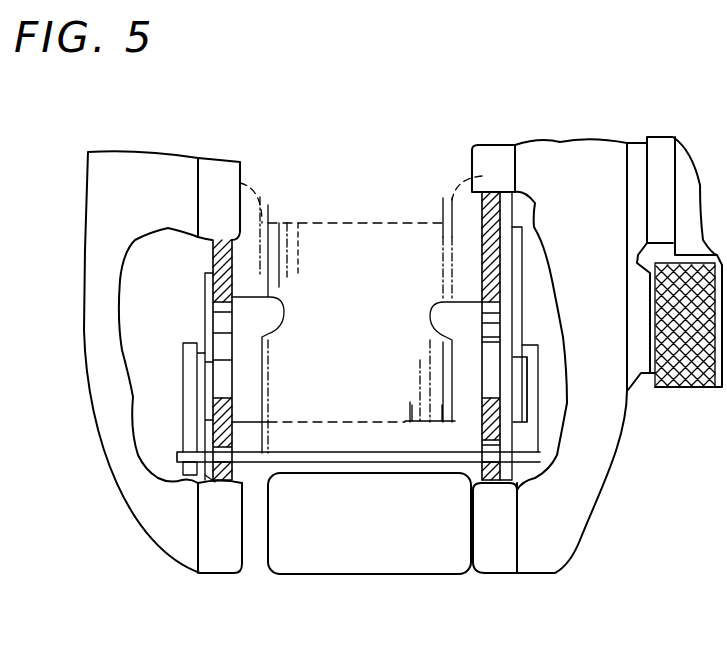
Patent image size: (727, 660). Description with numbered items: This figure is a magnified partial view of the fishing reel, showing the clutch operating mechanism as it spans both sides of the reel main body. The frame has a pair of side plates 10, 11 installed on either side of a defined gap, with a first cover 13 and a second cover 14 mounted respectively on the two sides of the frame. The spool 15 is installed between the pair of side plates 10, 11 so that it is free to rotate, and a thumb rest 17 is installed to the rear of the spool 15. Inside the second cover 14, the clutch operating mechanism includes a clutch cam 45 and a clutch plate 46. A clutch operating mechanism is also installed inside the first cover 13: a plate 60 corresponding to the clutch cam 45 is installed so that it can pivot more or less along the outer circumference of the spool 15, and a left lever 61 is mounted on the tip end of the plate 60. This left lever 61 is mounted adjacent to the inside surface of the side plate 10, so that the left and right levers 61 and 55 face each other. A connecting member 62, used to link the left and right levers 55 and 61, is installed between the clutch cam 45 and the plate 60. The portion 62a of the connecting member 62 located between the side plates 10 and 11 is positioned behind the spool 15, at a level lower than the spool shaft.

The first cover 13 is at (131, 172).
The second cover 14 is at (545, 165).
The side plate 10 is at (230, 256).
The side plate 11 is at (487, 225).
The spool 15 is at (345, 237).
The thumb rest 17 is at (425, 545).
The clutch cam 45 is at (518, 258).
The clutch plate 46 is at (510, 210).
The right lever 55 is at (428, 308).
The plate 60 is at (208, 293).
The left lever 61 is at (278, 315).
The connecting member 62 is at (533, 440).
The portion of connecting member 62a is at (320, 456).